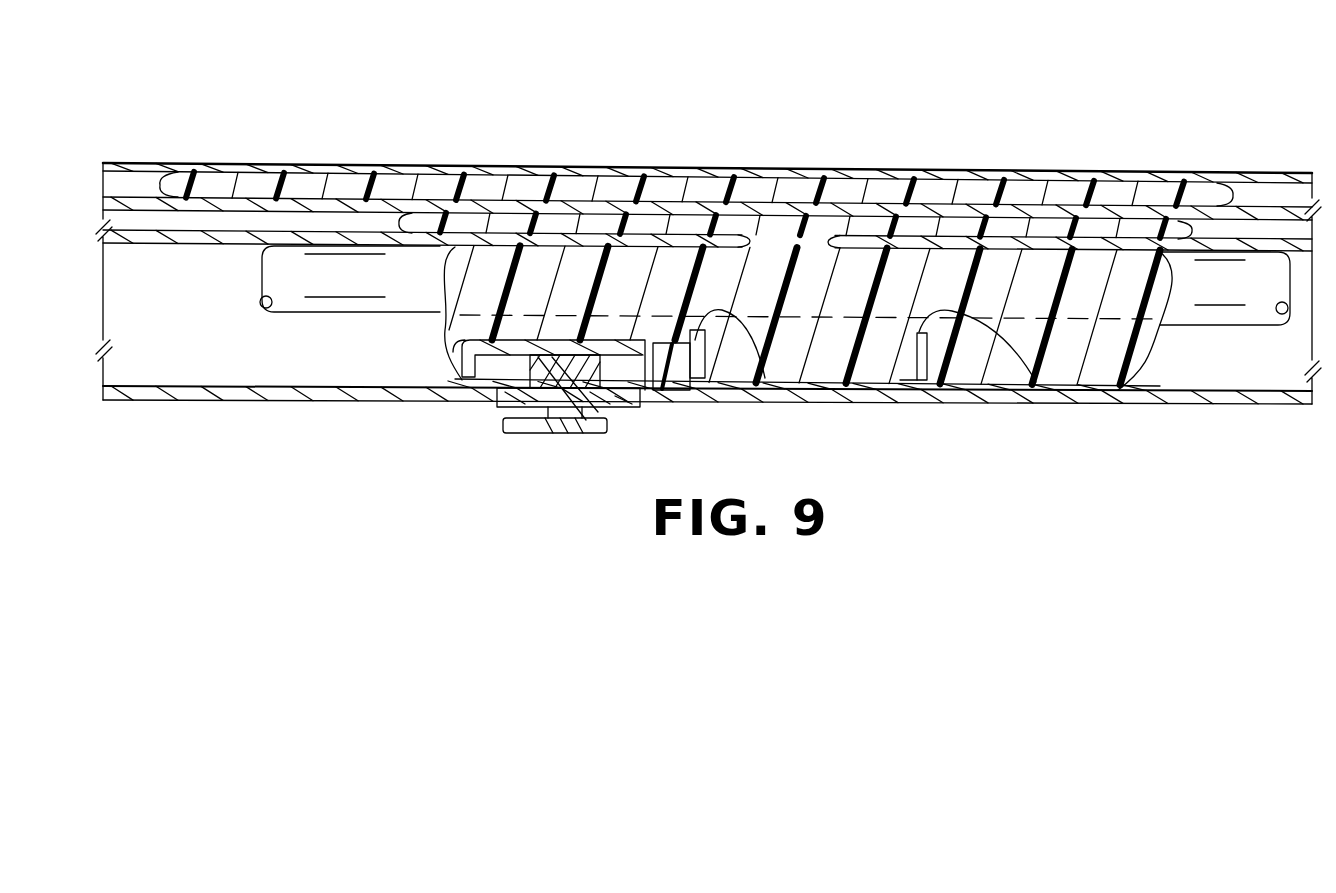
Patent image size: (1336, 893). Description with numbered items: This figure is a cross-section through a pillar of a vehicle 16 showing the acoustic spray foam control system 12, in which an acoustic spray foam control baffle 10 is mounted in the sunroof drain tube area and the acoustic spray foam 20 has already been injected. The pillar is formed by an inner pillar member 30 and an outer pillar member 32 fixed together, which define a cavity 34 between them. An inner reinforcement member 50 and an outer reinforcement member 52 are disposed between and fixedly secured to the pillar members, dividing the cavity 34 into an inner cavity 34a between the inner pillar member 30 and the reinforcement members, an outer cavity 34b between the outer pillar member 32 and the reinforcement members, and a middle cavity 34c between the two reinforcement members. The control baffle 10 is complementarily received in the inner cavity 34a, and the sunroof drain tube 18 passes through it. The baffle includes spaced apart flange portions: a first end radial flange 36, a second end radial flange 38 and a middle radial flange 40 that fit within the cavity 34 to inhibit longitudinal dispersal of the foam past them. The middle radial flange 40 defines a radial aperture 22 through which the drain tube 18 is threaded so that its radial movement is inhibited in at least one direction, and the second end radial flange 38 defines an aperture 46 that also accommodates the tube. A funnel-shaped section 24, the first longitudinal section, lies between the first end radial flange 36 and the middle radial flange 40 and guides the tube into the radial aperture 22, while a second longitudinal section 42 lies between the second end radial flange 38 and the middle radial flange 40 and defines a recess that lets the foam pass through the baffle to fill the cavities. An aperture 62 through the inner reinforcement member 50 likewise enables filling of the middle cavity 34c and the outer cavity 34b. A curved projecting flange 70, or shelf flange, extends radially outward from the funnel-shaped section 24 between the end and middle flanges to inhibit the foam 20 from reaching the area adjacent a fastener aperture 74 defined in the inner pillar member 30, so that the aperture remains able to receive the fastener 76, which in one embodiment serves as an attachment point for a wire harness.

The acoustic spray foam control baffle 10 is at (912, 395).
The acoustic spray foam control system 12 is at (444, 411).
The vehicle 16 is at (672, 166).
The sunroof drain tube 18 is at (292, 300).
The acoustic spray foam 20 is at (1060, 195).
The radial aperture 22 is at (768, 357).
The funnel-shaped section 24 is at (500, 357).
The inner pillar member 30 is at (870, 395).
The outer pillar member 32 is at (900, 172).
The cavity 34 is at (1149, 378).
The inner cavity 34a is at (423, 343).
The outer cavity 34b is at (153, 187).
The middle cavity 34c is at (343, 224).
The first end radial flange 36 is at (460, 373).
The second end radial flange 38 is at (930, 362).
The middle radial flange 40 is at (727, 380).
The second longitudinal section 42 is at (825, 380).
The aperture 46 is at (1045, 390).
The inner reinforcement member 50 is at (600, 237).
The outer reinforcement member 52 is at (513, 207).
The aperture 62 is at (822, 238).
The curved projecting flange 70 is at (676, 392).
The fastener aperture 74 is at (530, 430).
The fastener 76 is at (553, 434).